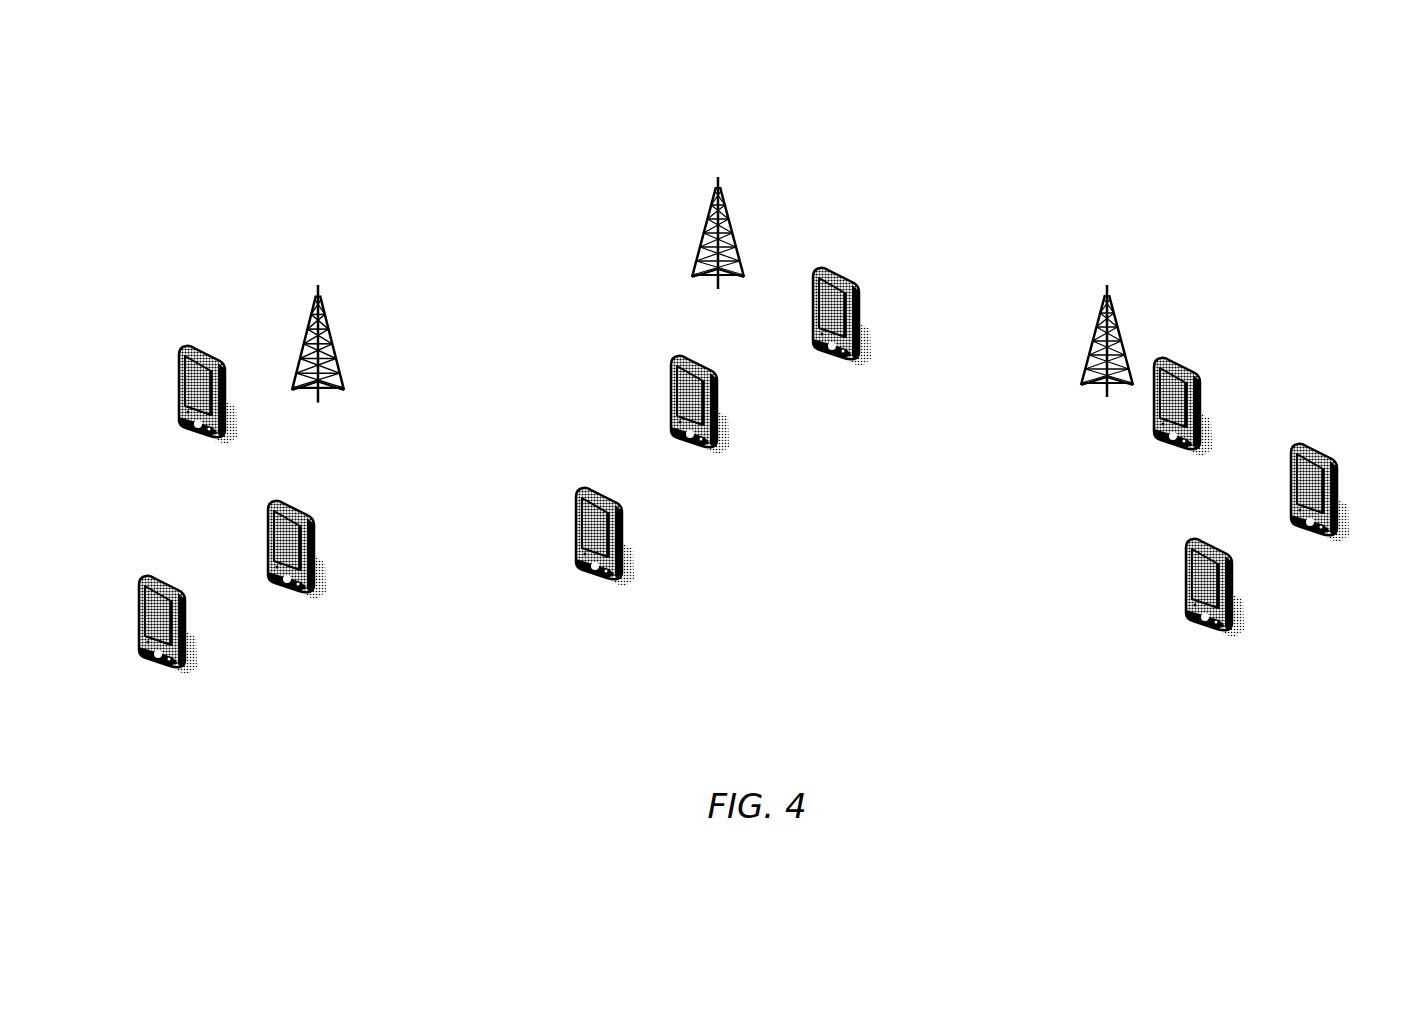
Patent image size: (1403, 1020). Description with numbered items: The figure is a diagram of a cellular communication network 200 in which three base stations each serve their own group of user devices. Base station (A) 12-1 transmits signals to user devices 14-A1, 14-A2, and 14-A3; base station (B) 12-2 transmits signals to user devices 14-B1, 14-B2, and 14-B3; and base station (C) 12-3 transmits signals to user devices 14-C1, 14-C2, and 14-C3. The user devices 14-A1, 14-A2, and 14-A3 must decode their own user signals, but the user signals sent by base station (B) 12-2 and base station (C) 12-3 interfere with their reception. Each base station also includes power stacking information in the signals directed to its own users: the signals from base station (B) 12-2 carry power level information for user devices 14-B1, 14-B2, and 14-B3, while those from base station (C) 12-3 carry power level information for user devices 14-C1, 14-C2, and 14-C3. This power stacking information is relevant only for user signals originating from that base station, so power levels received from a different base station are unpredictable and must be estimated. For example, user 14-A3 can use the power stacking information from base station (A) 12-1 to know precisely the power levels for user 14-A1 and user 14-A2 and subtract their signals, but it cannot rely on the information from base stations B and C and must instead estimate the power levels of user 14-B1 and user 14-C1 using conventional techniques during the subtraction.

The cellular communication network 200 is at (744, 380).
The base station (A) 12-1 is at (758, 135).
The base station (B) 12-2 is at (360, 232).
The base station (C) 12-3 is at (1157, 228).
The user device 14-A1 is at (577, 490).
The user device 14-A2 is at (670, 363).
The user device 14-A3 is at (858, 288).
The user device 14-B1 is at (163, 582).
The user device 14-B2 is at (315, 553).
The user device 14-B3 is at (182, 352).
The user device 14-C1 is at (1298, 442).
The user device 14-C2 is at (1182, 605).
The user device 14-C3 is at (1203, 398).